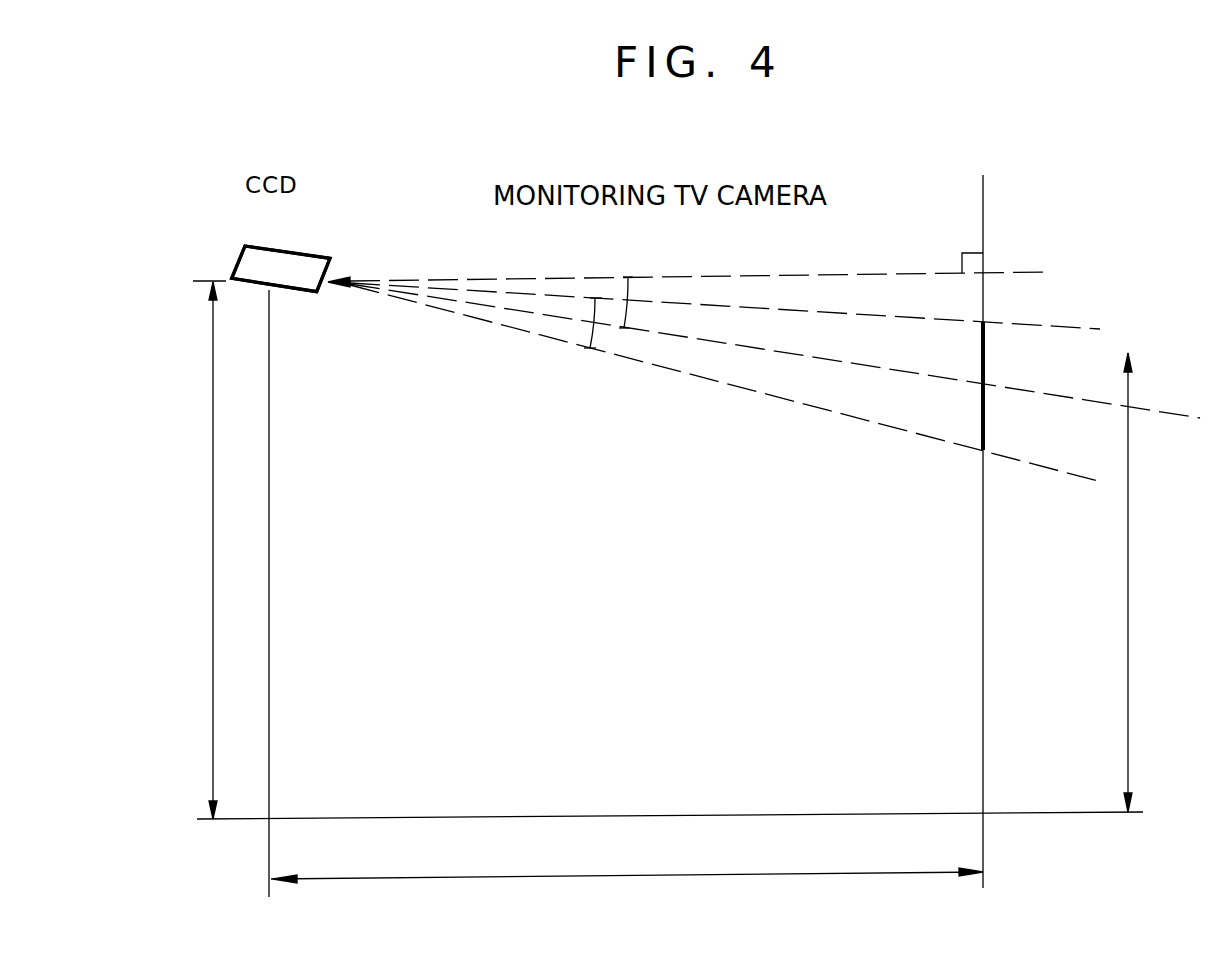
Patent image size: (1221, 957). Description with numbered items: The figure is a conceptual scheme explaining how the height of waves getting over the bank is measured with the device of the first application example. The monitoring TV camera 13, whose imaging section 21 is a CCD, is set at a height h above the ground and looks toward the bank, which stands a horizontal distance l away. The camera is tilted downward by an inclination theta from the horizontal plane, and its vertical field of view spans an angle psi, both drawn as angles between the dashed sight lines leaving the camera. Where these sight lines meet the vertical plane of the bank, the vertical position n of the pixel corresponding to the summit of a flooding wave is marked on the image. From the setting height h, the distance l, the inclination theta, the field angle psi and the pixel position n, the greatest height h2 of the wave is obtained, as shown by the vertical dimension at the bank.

The monitoring TV camera 13 is at (290, 251).
The imaging section 21 is at (355, 235).
The inclination of the monitoring TV camera theta is at (632, 291).
The angle of visual field psi is at (600, 333).
The setting height of the monitoring TV camera h is at (206, 550).
The greatest height of the wave h2 is at (1158, 566).
The vertical position of a pixel n is at (1140, 353).
The distance from the TV camera to the bank l is at (627, 866).